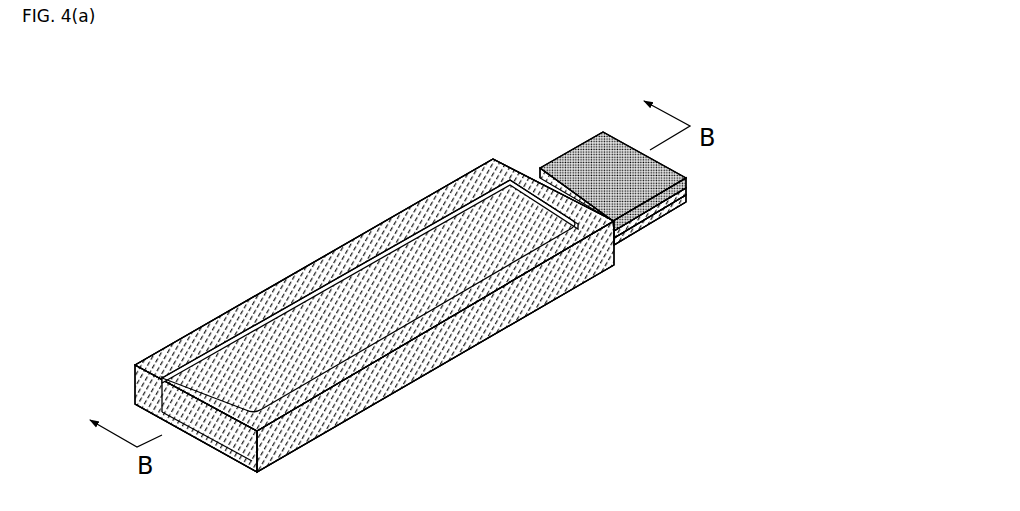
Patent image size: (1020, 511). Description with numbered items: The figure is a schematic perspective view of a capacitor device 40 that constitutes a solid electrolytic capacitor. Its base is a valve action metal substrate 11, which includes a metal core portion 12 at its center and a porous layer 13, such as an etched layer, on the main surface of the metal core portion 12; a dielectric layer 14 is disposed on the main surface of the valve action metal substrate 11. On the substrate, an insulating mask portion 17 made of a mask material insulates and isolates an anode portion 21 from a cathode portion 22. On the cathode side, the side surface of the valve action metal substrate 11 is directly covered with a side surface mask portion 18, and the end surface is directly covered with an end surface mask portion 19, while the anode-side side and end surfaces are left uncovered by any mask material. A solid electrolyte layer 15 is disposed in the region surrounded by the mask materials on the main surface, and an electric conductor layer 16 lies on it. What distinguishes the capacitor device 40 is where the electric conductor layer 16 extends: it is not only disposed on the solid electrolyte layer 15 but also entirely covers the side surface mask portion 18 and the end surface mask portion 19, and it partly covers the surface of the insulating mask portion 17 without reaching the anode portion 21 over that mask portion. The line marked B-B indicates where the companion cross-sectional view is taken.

The capacitor device 40 is at (303, 218).
The solid electrolyte layer 15 is at (280, 330).
The electric conductor layer 16 is at (177, 362).
The insulating mask portion 17 is at (524, 170).
The side surface mask portion 18 is at (432, 352).
The end surface mask portion 19 is at (214, 439).
The cathode portion 22 is at (339, 440).
The valve action metal substrate 11 is at (637, 179).
The dielectric layer 14 is at (575, 150).
The porous layer 13 is at (688, 181).
The metal core portion 12 is at (688, 196).
The anode portion 21 is at (664, 229).